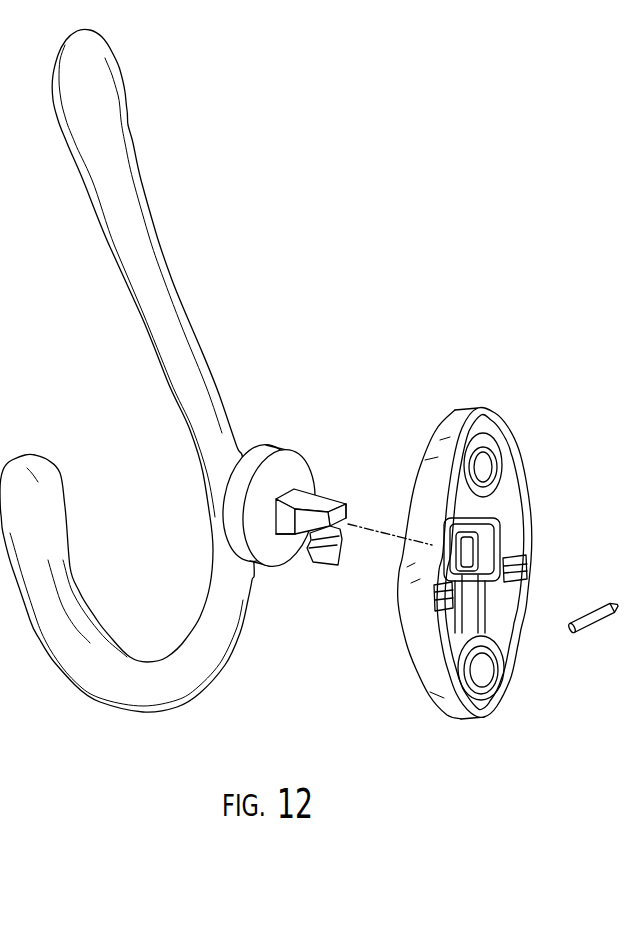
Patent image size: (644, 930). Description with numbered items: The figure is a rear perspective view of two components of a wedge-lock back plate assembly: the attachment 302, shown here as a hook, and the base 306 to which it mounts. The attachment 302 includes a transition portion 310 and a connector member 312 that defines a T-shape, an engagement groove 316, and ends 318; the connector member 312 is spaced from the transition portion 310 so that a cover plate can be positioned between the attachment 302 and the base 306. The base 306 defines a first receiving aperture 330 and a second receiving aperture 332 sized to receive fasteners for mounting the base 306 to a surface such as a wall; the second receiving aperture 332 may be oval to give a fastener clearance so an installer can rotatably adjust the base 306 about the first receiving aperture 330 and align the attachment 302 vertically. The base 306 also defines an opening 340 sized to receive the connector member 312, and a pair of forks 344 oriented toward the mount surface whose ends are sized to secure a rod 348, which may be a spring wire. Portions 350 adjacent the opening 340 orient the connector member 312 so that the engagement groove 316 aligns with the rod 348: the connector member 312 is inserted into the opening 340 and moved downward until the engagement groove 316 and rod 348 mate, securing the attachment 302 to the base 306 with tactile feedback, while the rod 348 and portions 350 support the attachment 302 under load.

The attachment 302 is at (162, 178).
The base 306 is at (467, 395).
The transition portion 310 is at (298, 450).
The connector member 312 is at (332, 482).
The engagement groove 316 is at (313, 570).
The ends 318 is at (348, 516).
The first receiving aperture 330 is at (515, 440).
The second receiving aperture 332 is at (492, 668).
The opening 340 is at (500, 518).
The pair of forks 344 is at (523, 570).
The rod 348 is at (580, 631).
The portions 350 is at (478, 555).